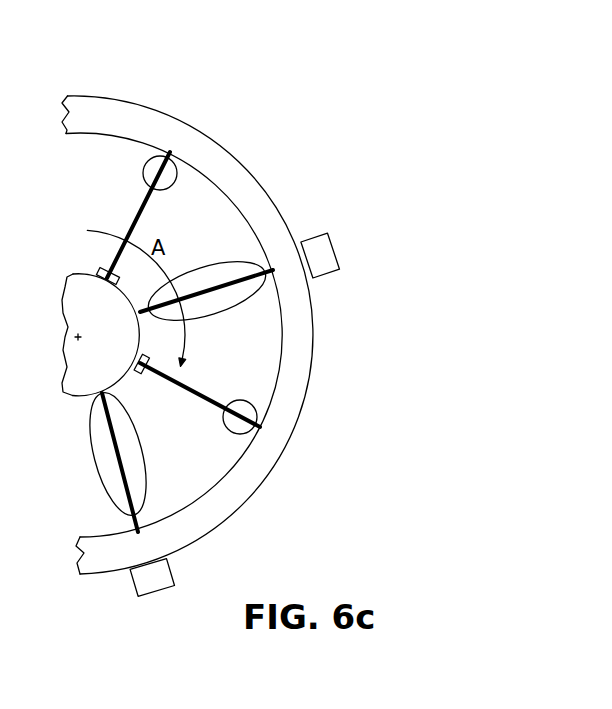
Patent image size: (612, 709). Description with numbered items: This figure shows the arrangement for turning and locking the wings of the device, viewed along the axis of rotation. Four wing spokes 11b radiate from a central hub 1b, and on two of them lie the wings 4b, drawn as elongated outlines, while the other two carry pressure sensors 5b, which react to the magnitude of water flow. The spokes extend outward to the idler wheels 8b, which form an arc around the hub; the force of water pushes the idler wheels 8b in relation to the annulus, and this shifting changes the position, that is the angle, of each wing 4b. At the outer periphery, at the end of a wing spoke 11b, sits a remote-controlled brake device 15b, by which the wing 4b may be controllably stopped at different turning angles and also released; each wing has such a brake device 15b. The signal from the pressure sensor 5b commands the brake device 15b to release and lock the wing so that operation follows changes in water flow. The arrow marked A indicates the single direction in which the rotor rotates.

The idler wheels 8b is at (240, 170).
The hub 1b is at (118, 317).
The wing spoke 11b is at (219, 290).
The pressure sensor 5b is at (144, 172).
The wing 4b is at (210, 263).
The brake device 15b is at (317, 247).